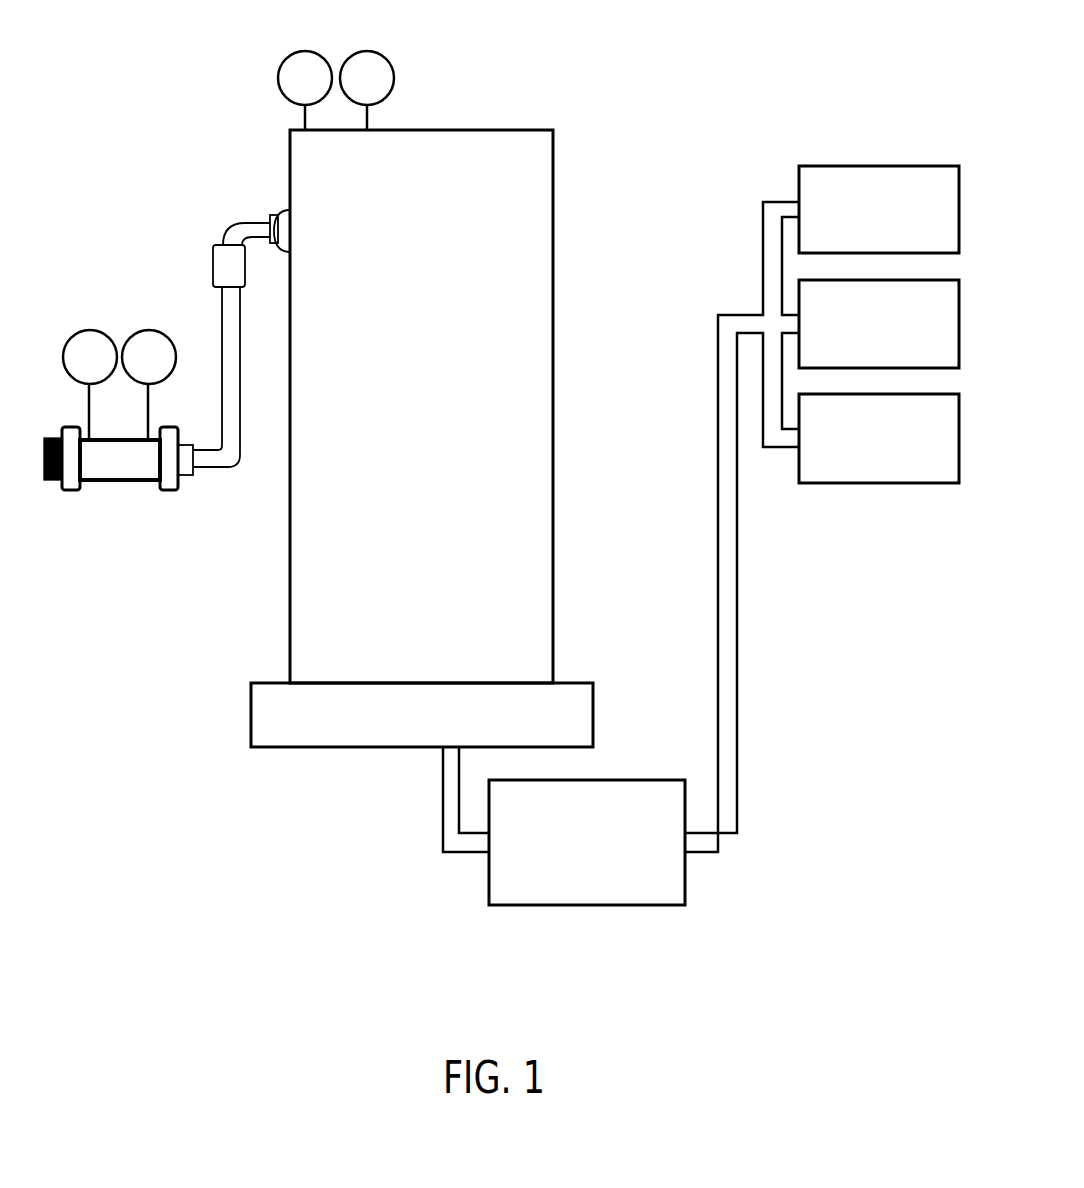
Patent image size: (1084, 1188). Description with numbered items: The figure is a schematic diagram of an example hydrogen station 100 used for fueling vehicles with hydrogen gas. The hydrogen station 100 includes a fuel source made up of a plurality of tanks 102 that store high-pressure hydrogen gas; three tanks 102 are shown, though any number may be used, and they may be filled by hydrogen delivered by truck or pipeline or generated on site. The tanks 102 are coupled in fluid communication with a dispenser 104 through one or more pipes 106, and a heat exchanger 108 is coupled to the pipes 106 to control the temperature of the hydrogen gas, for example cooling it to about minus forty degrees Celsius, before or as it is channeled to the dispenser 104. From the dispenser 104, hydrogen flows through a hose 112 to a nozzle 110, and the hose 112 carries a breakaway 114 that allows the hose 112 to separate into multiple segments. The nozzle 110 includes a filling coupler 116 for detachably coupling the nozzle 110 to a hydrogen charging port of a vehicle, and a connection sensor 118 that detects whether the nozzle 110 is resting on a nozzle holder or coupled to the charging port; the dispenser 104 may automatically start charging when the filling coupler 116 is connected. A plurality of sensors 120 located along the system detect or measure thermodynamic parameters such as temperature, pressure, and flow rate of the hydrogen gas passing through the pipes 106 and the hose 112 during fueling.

The hydrogen station 100 is at (835, 824).
The tanks 102 is at (897, 240).
The dispenser 104 is at (440, 448).
The pipes 106 is at (737, 618).
The heat exchanger 108 is at (605, 886).
The nozzle 110 is at (161, 505).
The hose 112 is at (205, 470).
The breakaway 114 is at (222, 245).
The filling coupler 116 is at (74, 492).
The connection sensor 118 is at (45, 482).
The sensors 120 is at (287, 45).